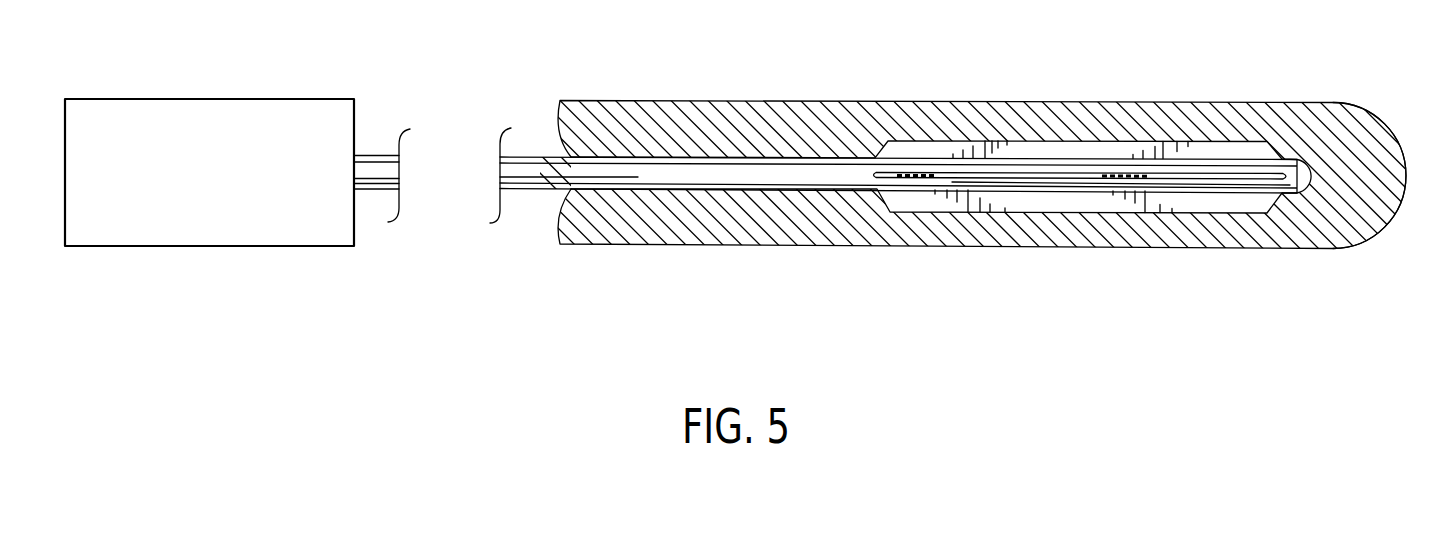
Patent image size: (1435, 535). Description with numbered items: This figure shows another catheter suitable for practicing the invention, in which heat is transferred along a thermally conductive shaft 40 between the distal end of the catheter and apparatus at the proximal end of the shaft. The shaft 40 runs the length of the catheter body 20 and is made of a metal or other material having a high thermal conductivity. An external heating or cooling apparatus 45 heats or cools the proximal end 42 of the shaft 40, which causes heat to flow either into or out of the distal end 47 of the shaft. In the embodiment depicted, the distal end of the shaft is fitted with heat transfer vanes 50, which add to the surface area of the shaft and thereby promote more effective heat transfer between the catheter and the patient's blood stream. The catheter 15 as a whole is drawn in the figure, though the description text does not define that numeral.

The catheter probe 15 is at (1048, 249).
The catheter body 20 is at (668, 110).
The thermally conductive shaft 40 is at (518, 172).
The proximal end 42 is at (377, 178).
The external heating or cooling apparatus 45 is at (202, 99).
The distal end 47 is at (1316, 150).
The heat transfer vanes 50 is at (1076, 152).